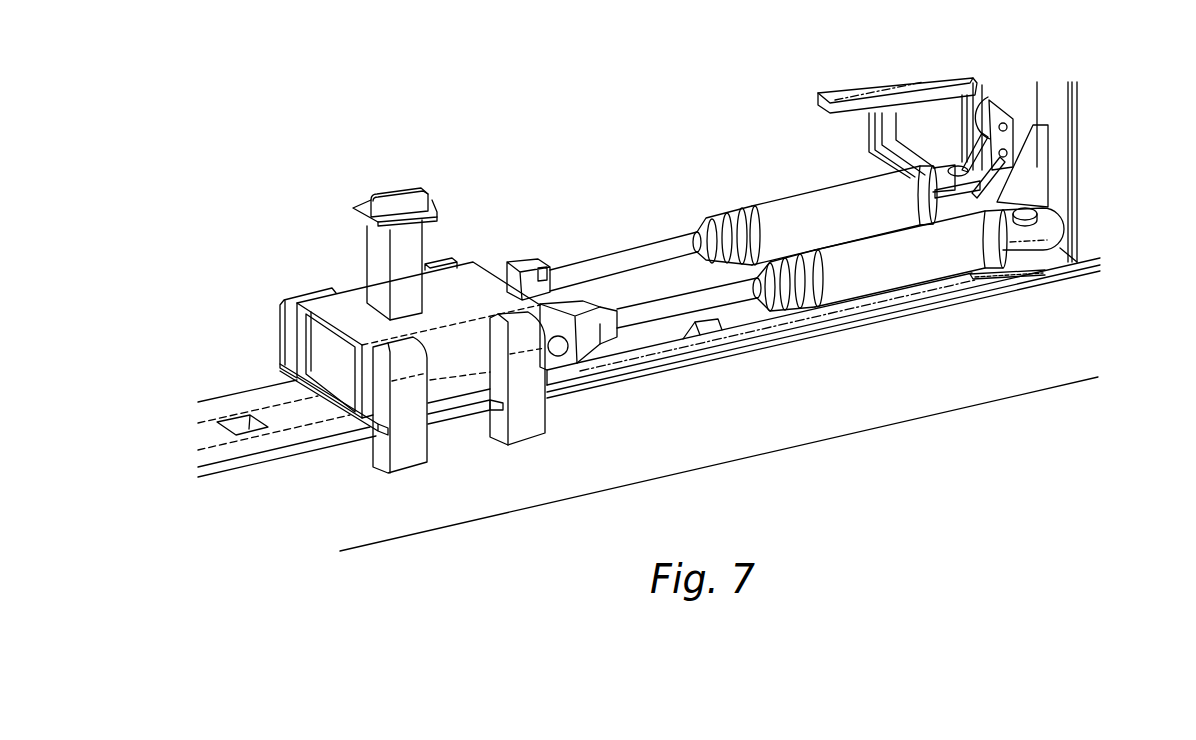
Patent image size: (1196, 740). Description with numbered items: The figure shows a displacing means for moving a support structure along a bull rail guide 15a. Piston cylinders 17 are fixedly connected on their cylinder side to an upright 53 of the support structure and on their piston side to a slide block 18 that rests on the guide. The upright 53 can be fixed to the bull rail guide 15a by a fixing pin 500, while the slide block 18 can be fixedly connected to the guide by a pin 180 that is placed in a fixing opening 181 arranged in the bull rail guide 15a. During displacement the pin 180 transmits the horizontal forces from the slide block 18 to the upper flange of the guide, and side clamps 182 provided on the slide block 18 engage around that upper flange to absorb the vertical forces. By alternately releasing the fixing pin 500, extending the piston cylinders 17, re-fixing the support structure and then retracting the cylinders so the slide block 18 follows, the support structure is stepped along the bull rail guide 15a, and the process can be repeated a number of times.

The bull rail guide 15a is at (1060, 330).
The piston cylinder 17 is at (766, 212).
The slide block 18 is at (328, 310).
The upright 53 is at (1057, 165).
The pin 180 is at (402, 194).
The fixing opening 181 is at (243, 422).
The side clamp 182 is at (437, 260).
The fixing pin 500 is at (1000, 117).